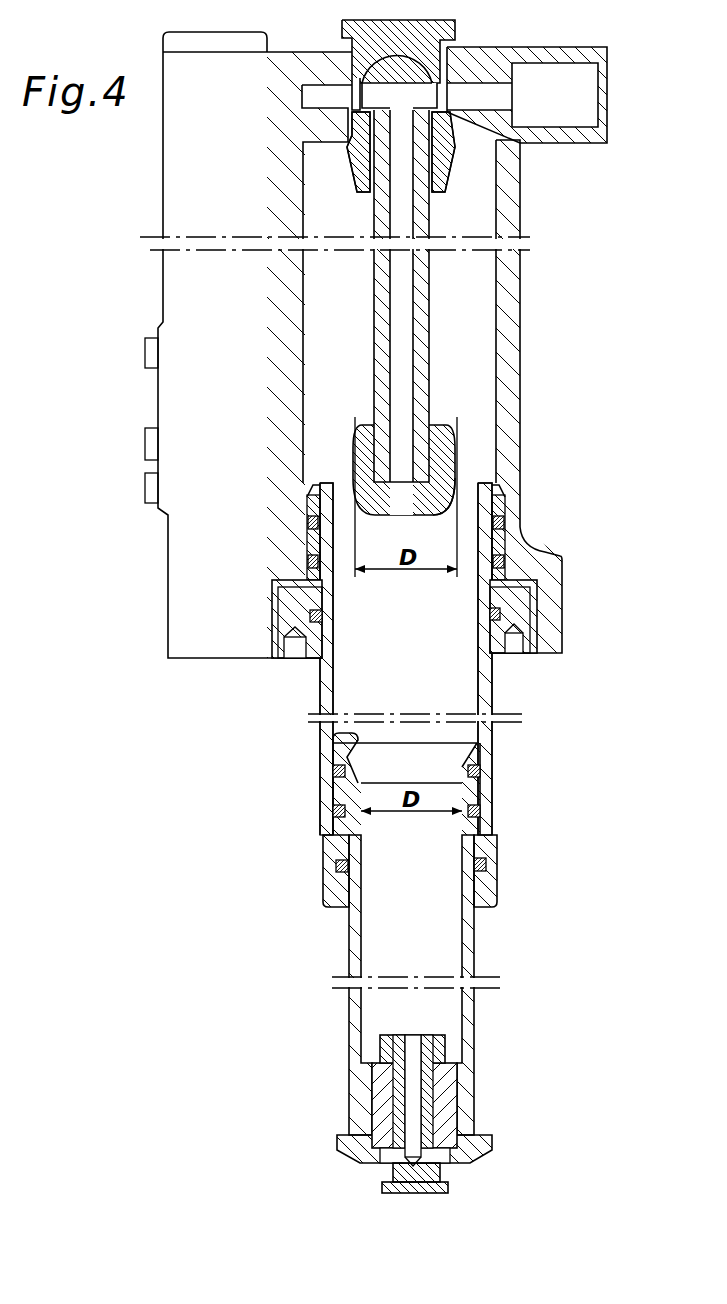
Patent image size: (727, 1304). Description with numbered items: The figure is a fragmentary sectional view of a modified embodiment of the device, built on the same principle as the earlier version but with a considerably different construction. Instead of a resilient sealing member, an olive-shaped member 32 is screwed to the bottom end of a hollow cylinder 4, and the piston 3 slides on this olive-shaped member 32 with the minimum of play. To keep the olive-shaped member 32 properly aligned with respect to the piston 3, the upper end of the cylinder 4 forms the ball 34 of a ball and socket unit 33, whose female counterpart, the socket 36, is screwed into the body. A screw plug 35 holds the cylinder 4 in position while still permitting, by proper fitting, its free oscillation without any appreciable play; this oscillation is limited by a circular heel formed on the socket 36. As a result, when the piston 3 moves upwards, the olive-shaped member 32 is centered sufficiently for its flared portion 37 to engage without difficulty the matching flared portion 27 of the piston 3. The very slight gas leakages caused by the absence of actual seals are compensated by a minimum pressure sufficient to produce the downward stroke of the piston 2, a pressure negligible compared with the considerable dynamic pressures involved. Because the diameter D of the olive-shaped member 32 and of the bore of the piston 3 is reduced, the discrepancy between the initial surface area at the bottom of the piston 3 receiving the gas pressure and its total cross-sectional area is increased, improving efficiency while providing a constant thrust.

The piston 2 is at (487, 543).
The piston 3 is at (472, 1015).
The hollow cylinder 4 is at (427, 318).
The flared portion of piston 27 is at (340, 733).
The olive-shaped member 32 is at (443, 447).
The ball and socket unit 33 is at (440, 123).
The ball 34 is at (356, 63).
The screw plug 35 is at (452, 30).
The socket 36 is at (446, 170).
The flared portion of olive-shaped member 37 is at (446, 503).